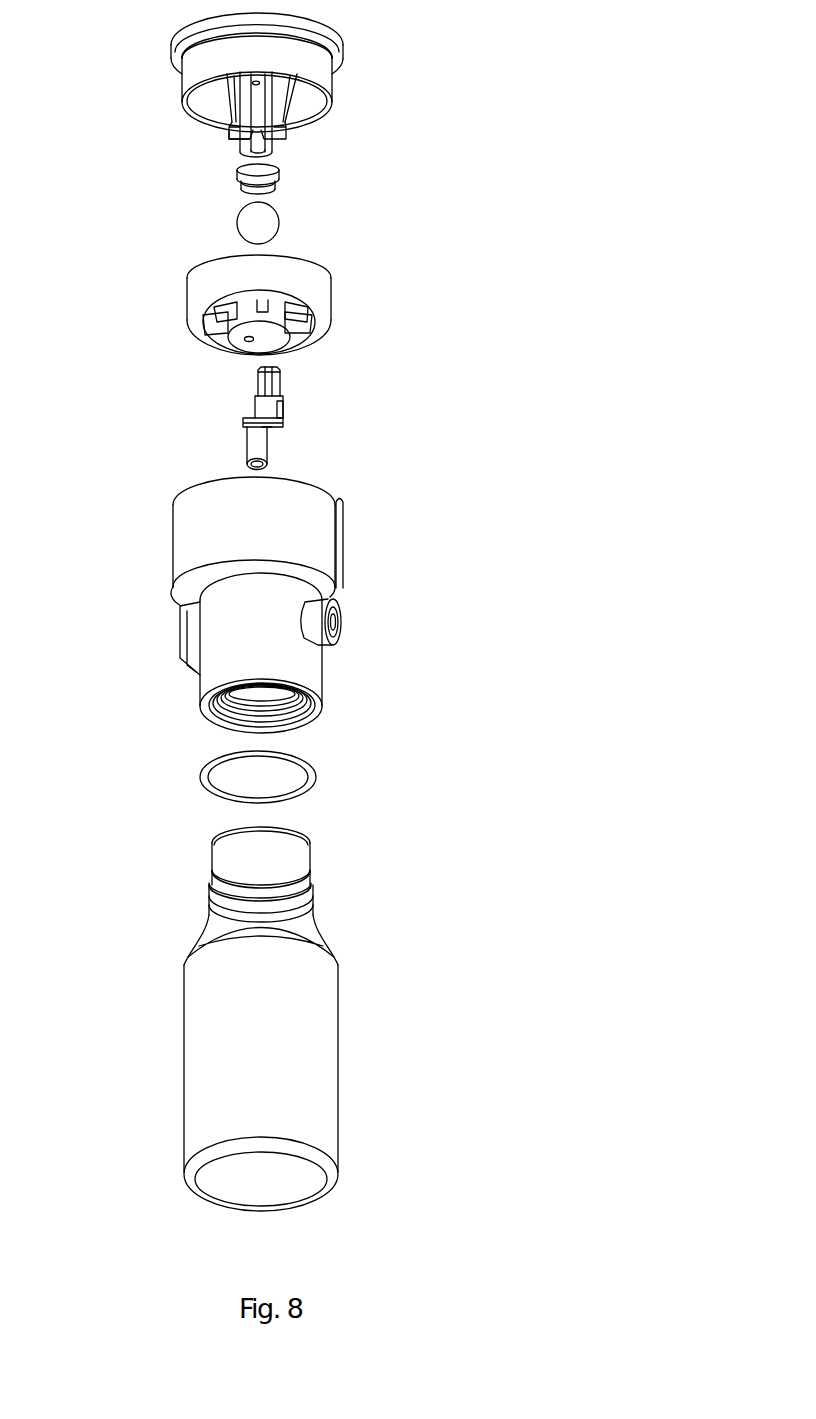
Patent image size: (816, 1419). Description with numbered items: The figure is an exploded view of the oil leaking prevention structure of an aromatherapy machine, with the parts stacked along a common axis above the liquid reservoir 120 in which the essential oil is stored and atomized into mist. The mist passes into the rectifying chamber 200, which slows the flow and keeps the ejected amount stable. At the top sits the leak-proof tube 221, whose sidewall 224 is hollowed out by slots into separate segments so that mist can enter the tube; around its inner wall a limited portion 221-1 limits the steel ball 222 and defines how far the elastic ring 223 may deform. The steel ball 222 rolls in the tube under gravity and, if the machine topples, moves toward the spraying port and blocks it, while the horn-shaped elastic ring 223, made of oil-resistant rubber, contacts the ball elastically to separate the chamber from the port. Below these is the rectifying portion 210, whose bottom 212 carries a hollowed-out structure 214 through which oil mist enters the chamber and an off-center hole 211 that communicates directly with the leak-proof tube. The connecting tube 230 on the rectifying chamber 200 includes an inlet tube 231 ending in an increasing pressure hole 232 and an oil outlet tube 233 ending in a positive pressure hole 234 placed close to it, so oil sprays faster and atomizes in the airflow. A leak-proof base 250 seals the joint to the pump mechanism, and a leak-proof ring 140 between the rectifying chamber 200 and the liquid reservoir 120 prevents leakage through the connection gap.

The liquid reservoir 120 is at (272, 1026).
The leak-proof ring 140 is at (315, 775).
The rectifying chamber 200 is at (303, 605).
The rectifying portion 210 is at (253, 324).
The hole 211 is at (246, 341).
The bottom 212 is at (190, 326).
The hollowed-out structure 214 is at (298, 337).
The leak-proof tube 221 is at (313, 144).
The limited portion 221-1 is at (253, 84).
The steel ball 222 is at (261, 225).
The elastic ring 223 is at (282, 182).
The sidewall 224 is at (232, 131).
The connecting tube 230 is at (265, 436).
The inlet tube 231 is at (279, 386).
The increasing pressure hole 232 is at (243, 421).
The oil outlet tube 233 is at (266, 451).
The positive pressure hole 234 is at (264, 429).
The leak-proof base 250 is at (342, 626).